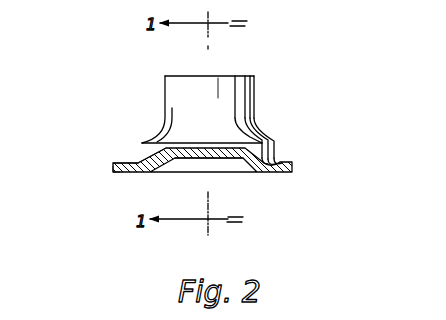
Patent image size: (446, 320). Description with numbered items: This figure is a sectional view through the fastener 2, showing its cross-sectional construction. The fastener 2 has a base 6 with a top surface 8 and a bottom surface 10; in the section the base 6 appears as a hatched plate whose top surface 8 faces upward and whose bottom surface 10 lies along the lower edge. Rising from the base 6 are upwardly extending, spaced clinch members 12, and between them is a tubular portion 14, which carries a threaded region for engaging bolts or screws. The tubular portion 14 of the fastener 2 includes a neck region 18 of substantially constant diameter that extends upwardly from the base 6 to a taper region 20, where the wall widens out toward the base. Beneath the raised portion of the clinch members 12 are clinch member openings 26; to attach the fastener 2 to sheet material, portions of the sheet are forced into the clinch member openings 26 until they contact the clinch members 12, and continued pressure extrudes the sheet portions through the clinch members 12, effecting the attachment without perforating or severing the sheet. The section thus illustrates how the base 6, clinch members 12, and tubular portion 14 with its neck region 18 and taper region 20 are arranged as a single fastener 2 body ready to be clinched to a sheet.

The fastener 2 is at (158, 88).
The base 6 is at (108, 162).
The top surface 8 is at (130, 155).
The bottom surface 10 is at (122, 174).
The clinch members 12 is at (195, 146).
The tubular portion 14 is at (259, 93).
The neck region 18 is at (284, 147).
The taper region 20 is at (272, 130).
The clinch member openings 26 is at (228, 168).